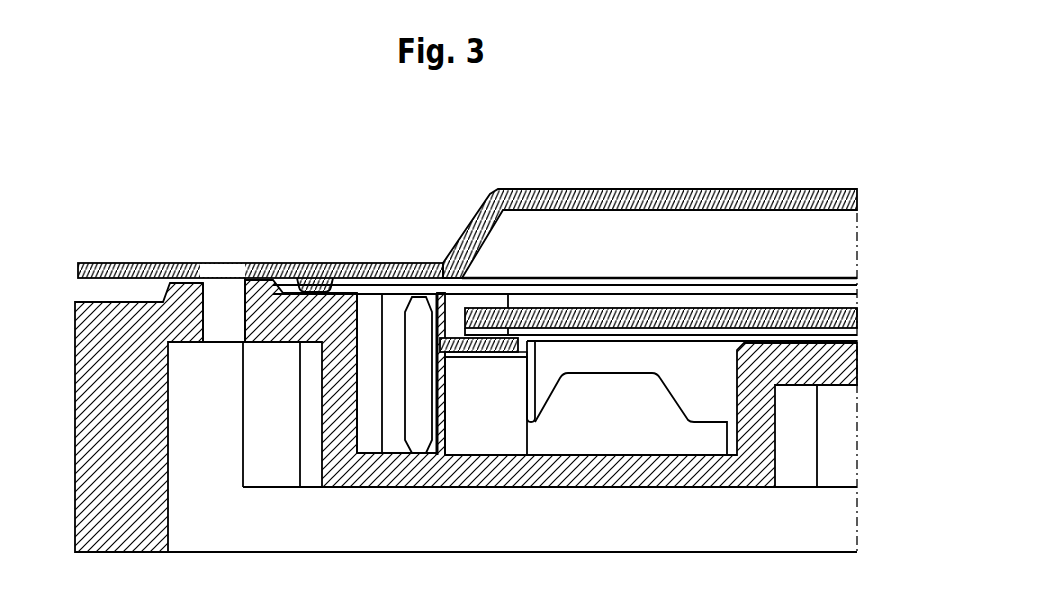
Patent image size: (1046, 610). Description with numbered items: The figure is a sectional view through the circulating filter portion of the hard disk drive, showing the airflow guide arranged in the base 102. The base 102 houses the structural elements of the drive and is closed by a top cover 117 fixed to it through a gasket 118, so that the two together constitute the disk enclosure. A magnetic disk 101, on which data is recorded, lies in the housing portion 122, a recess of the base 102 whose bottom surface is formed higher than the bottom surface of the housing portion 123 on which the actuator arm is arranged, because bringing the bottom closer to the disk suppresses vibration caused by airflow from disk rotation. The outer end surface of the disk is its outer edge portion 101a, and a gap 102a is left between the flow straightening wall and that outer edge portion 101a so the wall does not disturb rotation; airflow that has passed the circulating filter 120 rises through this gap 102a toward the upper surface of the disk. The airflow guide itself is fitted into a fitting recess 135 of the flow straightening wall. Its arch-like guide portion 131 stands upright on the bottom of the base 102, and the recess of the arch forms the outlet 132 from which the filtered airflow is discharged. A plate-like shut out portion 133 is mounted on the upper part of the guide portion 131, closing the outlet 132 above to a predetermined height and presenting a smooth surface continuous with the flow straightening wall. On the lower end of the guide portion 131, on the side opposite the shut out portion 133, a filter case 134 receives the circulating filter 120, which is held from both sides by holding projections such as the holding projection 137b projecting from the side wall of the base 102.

The magnetic disk 101 is at (568, 307).
The outer edge portion 101a is at (455, 297).
The base 102 is at (75, 492).
The gap 102a is at (463, 353).
The top cover 117 is at (362, 263).
The gasket 118 is at (305, 281).
The circulating filter 120 is at (421, 455).
The housing portion 122 is at (494, 455).
The housing portion 123 is at (817, 340).
The guide portion 131 is at (513, 357).
The outlet 132 is at (537, 372).
The shut out portion 133 is at (447, 277).
The filter case 134 is at (628, 455).
The fitting recess 135 is at (368, 312).
The holding projection 137b is at (393, 453).